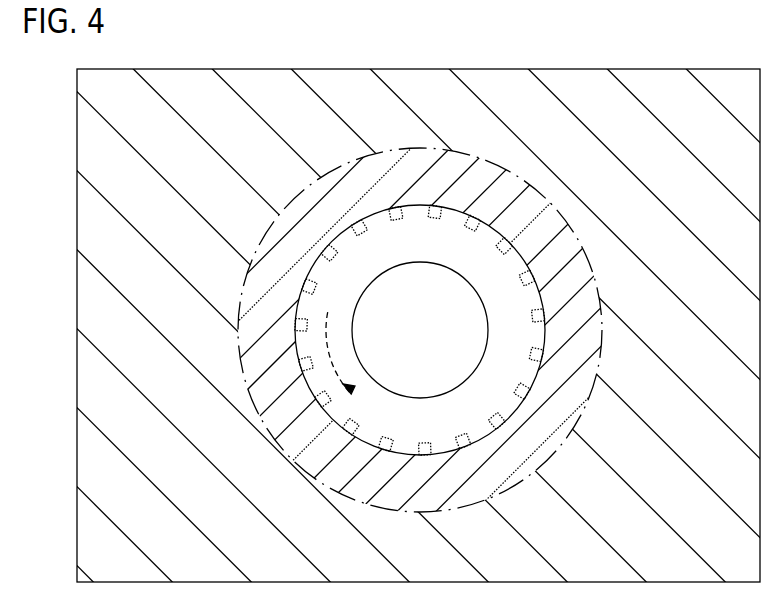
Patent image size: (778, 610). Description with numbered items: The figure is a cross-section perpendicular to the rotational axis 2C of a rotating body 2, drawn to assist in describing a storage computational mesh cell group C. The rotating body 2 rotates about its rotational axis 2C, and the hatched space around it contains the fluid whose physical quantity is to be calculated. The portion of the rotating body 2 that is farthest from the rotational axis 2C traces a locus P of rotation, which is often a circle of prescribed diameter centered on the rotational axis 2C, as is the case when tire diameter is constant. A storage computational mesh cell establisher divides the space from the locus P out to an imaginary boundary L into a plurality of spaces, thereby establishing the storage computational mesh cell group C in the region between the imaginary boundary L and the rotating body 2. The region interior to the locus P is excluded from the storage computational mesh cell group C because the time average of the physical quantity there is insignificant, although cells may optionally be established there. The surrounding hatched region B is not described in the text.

The substrate / base material B is at (208, 356).
The storage computational mesh cell group C is at (271, 359).
The imaginary boundary L is at (537, 470).
The rotating body 2 is at (424, 252).
The rotational axis 2C is at (418, 332).
The locus of rotation P is at (532, 332).